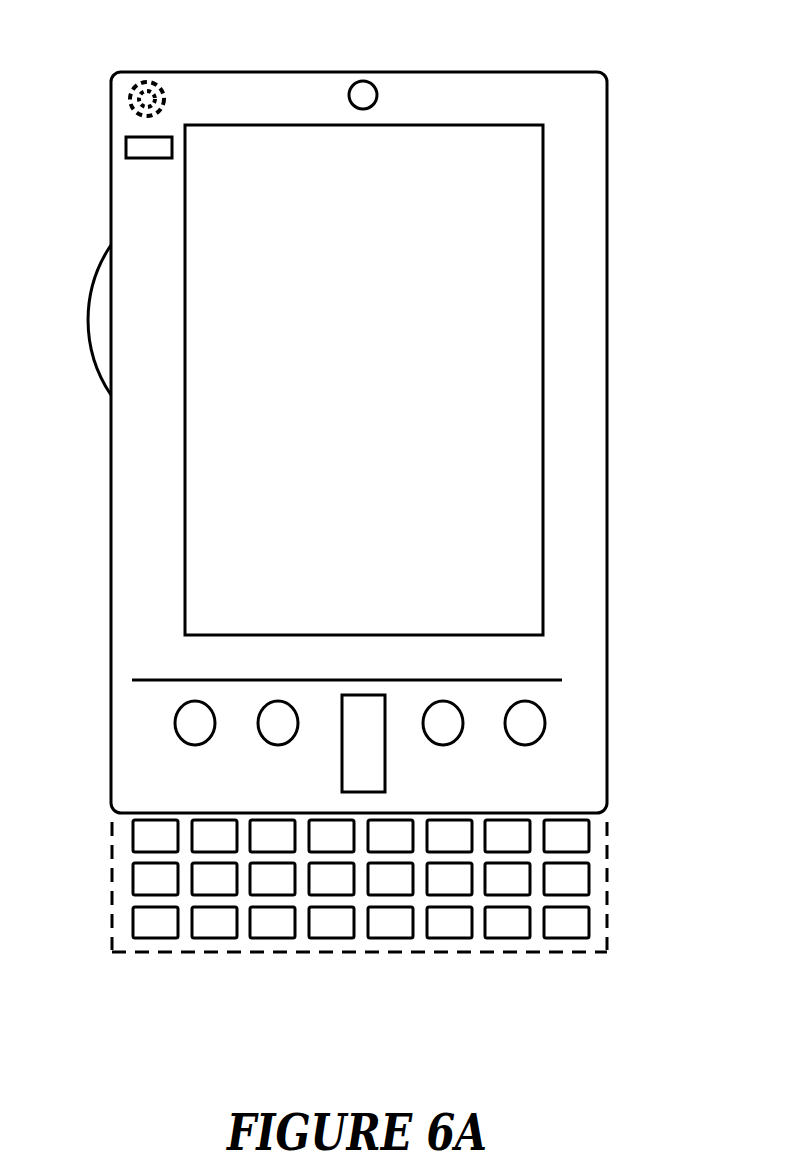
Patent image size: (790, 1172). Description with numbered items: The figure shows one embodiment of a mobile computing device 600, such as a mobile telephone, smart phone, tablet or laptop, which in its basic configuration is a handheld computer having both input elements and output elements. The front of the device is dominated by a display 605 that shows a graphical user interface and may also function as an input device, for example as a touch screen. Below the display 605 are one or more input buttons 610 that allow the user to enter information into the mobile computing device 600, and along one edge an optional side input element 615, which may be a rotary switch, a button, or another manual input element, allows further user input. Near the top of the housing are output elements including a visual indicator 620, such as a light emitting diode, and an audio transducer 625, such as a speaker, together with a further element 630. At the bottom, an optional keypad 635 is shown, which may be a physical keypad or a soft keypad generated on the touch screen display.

The mobile computing device 600 is at (607, 100).
The display 605 is at (213, 473).
The input buttons 610 is at (342, 752).
The side input element 615 is at (89, 305).
The visual indicator 620 is at (130, 142).
The audio transducer 625 is at (128, 91).
The camera 630 is at (357, 81).
The keypad 635 is at (126, 883).